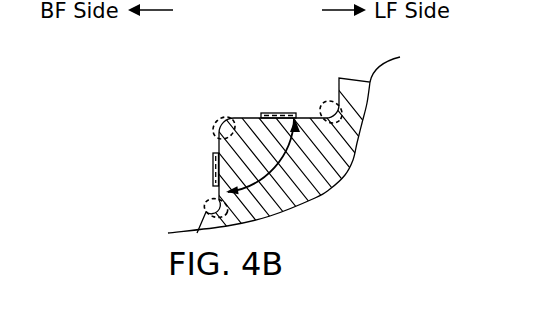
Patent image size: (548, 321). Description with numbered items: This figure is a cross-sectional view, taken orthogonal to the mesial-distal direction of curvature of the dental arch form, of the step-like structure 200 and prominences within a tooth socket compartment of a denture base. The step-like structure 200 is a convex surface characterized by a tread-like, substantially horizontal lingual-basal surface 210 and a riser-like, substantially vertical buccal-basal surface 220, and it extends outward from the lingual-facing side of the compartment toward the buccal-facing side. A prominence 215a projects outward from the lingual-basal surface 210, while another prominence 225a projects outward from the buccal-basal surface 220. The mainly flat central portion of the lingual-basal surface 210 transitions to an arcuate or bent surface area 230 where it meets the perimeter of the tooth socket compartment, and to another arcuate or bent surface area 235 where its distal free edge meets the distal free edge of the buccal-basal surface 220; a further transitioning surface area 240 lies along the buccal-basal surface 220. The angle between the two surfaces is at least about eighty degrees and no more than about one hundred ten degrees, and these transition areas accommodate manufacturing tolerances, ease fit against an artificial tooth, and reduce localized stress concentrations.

The step-like structure 200 is at (96, 50).
The tread-like lingual-basal surface 210 is at (247, 117).
The riser-like buccal-basal surface 220 is at (218, 148).
The prominence 215a is at (274, 113).
The prominence 225a is at (213, 172).
The arcuate or bent surface area 230 is at (329, 101).
The arcuate or bent surface area 235 is at (214, 122).
The transitioning surface area 240 is at (208, 201).